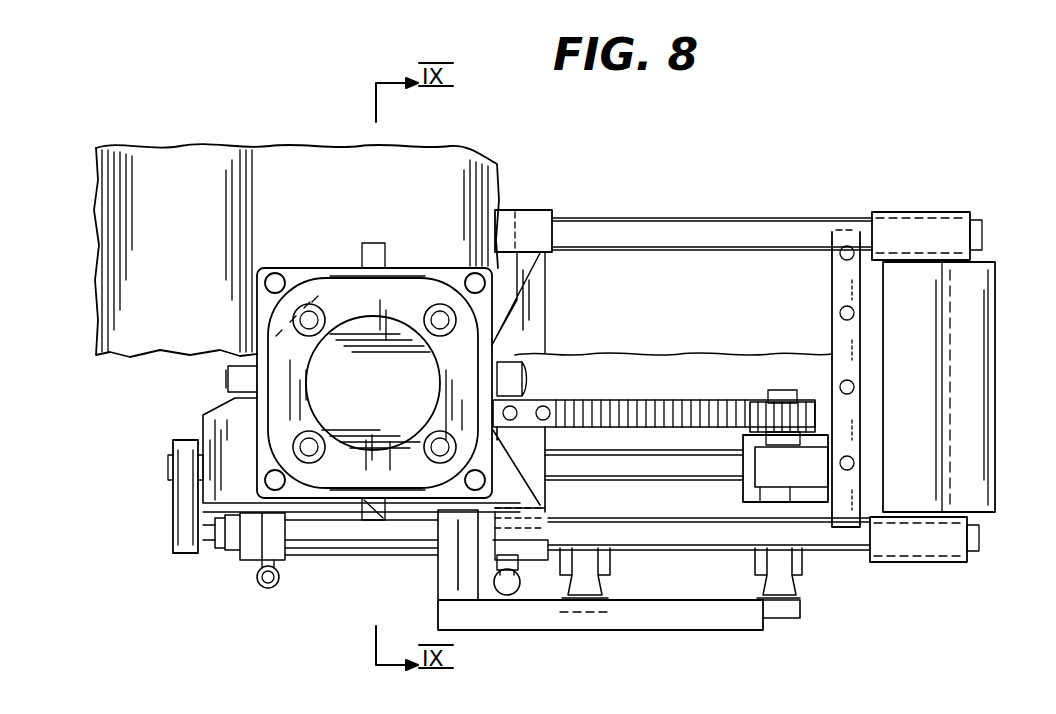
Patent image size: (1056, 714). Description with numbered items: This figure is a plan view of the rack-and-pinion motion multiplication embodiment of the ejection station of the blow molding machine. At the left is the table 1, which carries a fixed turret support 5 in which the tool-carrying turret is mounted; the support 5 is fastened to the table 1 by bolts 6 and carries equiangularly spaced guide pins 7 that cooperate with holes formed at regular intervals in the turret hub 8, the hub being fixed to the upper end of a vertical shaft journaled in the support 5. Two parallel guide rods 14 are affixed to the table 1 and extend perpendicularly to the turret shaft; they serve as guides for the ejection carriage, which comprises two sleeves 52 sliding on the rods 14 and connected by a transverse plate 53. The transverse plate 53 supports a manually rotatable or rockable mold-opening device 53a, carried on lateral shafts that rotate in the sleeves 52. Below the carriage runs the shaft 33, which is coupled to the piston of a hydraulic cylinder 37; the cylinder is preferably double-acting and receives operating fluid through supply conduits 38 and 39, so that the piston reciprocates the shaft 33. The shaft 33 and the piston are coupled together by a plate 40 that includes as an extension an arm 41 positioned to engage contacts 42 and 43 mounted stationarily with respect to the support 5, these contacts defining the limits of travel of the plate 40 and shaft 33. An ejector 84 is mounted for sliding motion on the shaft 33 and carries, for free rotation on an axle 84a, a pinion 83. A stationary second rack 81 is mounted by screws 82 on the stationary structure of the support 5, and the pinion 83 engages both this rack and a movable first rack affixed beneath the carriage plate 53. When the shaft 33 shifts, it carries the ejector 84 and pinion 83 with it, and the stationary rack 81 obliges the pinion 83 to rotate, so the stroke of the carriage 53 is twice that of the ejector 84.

The table 1 is at (286, 152).
The fixed turret support 5 is at (296, 268).
The bolts 6 is at (270, 280).
The guide pins 7 is at (310, 312).
The turret hub 8 is at (428, 292).
The guide rods 14 is at (752, 220).
The shaft 33 is at (690, 458).
The hydraulic cylinder 37 is at (344, 530).
The supply conduit 38 is at (266, 586).
The supply conduit 39 is at (506, 596).
The plate 40 is at (186, 520).
The arm 41 is at (642, 614).
The contact 42 is at (752, 560).
The contact 43 is at (562, 556).
The sleeves 52 is at (942, 226).
The transverse plate 53 is at (870, 290).
The mold-opening device 53a is at (972, 292).
The second rack 81 is at (642, 412).
The screws 82 is at (526, 410).
The pinion 83 is at (765, 402).
The ejector 84 is at (812, 466).
The axle 84a is at (784, 392).